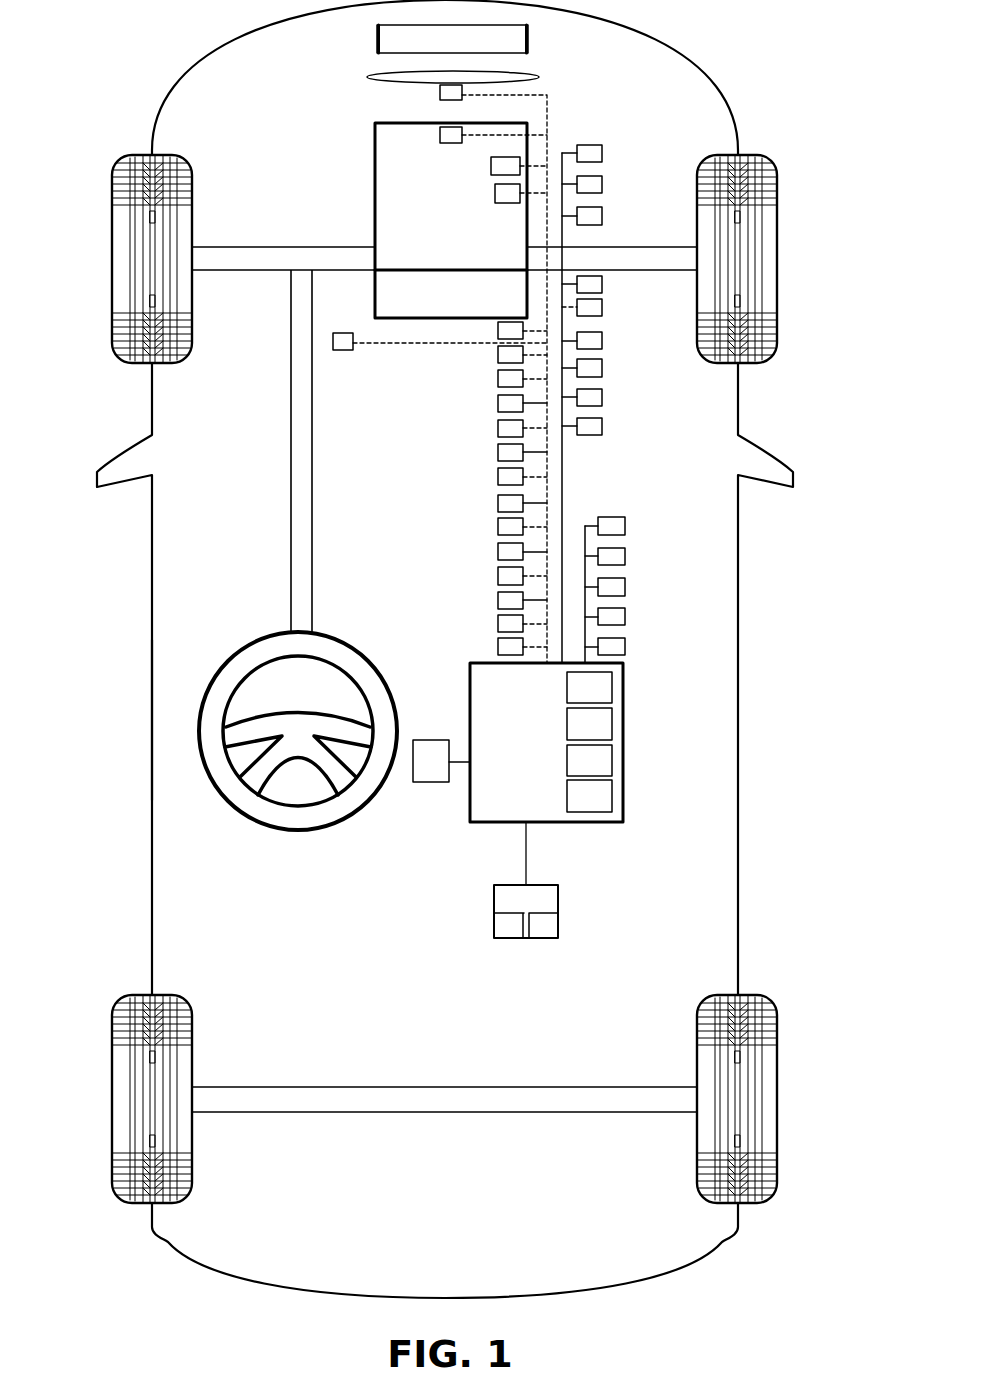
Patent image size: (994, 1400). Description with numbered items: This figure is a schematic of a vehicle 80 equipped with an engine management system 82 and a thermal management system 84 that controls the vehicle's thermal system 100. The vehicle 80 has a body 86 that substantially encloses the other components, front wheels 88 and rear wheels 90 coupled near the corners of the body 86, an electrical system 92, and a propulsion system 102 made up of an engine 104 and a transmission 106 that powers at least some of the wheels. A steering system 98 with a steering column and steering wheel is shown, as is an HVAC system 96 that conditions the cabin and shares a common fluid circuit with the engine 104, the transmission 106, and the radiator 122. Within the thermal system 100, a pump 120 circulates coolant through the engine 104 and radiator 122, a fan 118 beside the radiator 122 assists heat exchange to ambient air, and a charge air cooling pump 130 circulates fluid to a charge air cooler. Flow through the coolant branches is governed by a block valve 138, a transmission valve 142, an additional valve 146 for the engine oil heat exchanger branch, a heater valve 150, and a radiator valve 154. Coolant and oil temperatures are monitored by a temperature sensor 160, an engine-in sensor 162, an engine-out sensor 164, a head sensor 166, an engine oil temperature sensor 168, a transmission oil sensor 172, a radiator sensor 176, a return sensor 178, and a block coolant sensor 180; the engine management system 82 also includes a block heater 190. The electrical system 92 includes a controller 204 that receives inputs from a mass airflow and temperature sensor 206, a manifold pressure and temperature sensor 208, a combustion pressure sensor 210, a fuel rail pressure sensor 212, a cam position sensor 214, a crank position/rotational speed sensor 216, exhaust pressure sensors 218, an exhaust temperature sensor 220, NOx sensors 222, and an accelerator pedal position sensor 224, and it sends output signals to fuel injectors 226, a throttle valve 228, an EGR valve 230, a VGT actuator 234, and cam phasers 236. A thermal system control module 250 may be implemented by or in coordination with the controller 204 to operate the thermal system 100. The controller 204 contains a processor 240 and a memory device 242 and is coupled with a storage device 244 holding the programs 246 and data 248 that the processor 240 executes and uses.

The vehicle 80 is at (702, 26).
The engine management system 82 is at (726, 409).
The thermal management system 84 is at (654, 742).
The body 86 is at (151, 727).
The front wheels 88 is at (112, 252).
The rear wheels 90 is at (112, 1095).
The electrical system 92 is at (661, 809).
The HVAC system 96 is at (431, 783).
The steering system 98 is at (342, 837).
The thermal system 100 is at (588, 67).
The propulsion system 102 is at (353, 165).
The engine 104 is at (375, 230).
The transmission 106 is at (442, 303).
The fan 118 is at (440, 92).
The pump 120 is at (491, 166).
The radiator 122 is at (377, 32).
The charge air cooling pump 130 is at (495, 193).
The block valve 138 is at (625, 647).
The transmission valve 142 is at (625, 617).
The additional valve 146 is at (625, 587).
The heater valve 150 is at (625, 556).
The radiator valve 154 is at (625, 524).
The temperature sensor 160 is at (602, 152).
The engine-in sensor 162 is at (602, 185).
The engine-out sensor 164 is at (602, 216).
The head sensor 166 is at (602, 284).
The engine oil temperature sensor 168 is at (602, 307).
The transmission oil sensor 172 is at (602, 341).
The radiator sensor 176 is at (602, 368).
The return sensor 178 is at (602, 397).
The block coolant sensor 180 is at (602, 427).
The block heater 190 is at (498, 331).
The controller 204 is at (529, 762).
The mass airflow and temperature sensor 206 is at (498, 355).
The manifold pressure and temperature sensor 208 is at (498, 379).
The combustion pressure sensor 210 is at (498, 403).
The fuel rail pressure sensor 212 is at (498, 428).
The cam position sensor 214 is at (498, 452).
The crank position/rotational speed sensor 216 is at (462, 127).
The exhaust pressure sensors 218 is at (498, 477).
The exhaust temperature sensor 220 is at (498, 503).
The NOx sensors 222 is at (498, 527).
The accelerator pedal position sensor 224 is at (333, 341).
The fuel injectors 226 is at (498, 552).
The throttle valve 228 is at (498, 576).
The EGR valve 230 is at (498, 600).
The VGT actuator 234 is at (498, 624).
The cam phasers 236 is at (498, 647).
The processor 240 is at (603, 769).
The memory device 242 is at (603, 806).
The storage device 244 is at (558, 906).
The programs 246 is at (494, 928).
The data 248 is at (558, 928).
The thermal system control module 250 is at (622, 696).